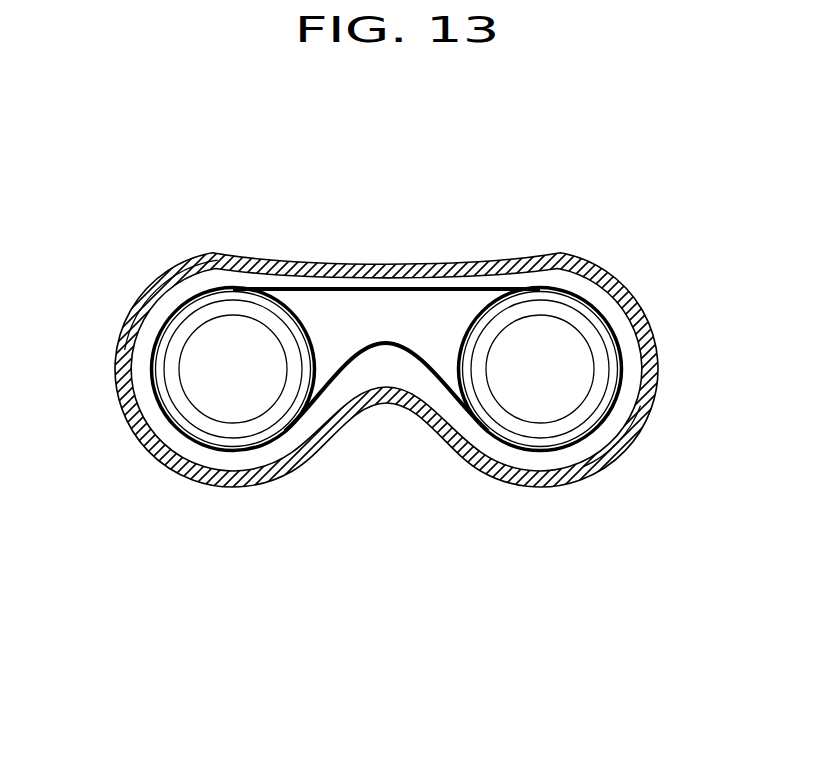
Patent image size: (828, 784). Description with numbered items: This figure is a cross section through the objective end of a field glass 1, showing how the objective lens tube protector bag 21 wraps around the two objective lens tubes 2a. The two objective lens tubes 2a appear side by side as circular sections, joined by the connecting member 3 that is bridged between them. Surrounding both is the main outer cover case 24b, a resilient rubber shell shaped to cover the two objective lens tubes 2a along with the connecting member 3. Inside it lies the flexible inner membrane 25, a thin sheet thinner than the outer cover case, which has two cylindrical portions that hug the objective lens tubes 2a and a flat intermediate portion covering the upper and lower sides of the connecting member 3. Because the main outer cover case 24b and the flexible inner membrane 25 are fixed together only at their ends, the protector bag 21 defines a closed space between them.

The field glass 1 is at (396, 340).
The objective lens tube 2a is at (192, 410).
The connecting member 3 is at (410, 303).
The objective lens tube protector bag 21 is at (574, 254).
The main outer cover case 24b is at (275, 479).
The flexible inner membrane 25 is at (445, 381).